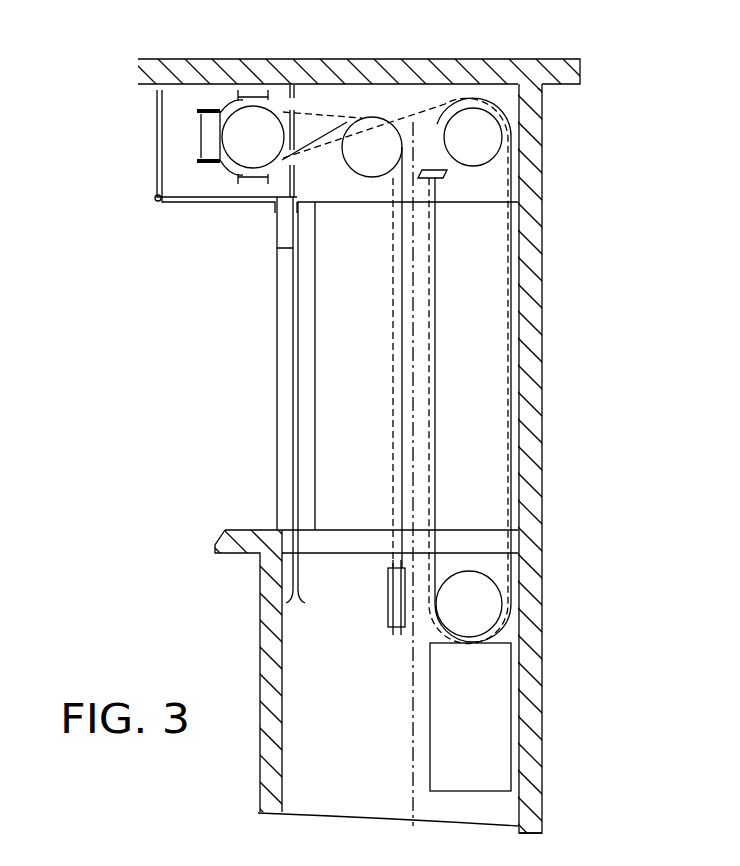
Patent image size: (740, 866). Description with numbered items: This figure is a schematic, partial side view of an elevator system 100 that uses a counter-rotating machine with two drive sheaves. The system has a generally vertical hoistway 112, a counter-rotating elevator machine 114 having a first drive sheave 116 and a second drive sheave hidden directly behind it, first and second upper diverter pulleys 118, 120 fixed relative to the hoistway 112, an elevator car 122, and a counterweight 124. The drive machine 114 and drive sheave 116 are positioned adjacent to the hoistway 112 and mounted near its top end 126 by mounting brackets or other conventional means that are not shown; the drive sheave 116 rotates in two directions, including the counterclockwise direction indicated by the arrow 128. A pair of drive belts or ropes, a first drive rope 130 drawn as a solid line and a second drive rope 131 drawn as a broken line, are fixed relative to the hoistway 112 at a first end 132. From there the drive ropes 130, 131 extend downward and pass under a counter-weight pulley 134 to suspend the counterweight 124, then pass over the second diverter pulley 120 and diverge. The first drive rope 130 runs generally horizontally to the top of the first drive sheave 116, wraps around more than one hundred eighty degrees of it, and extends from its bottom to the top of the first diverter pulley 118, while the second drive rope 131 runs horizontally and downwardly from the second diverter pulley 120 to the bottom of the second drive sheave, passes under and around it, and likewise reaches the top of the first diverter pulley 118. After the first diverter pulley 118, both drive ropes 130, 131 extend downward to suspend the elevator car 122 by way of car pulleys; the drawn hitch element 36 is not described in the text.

The elevator system 100 is at (182, 270).
The hoistway 112 is at (542, 282).
The counter-rotating elevator machine 114 is at (184, 146).
The first drive sheave 116 is at (255, 124).
The first upper diverter pulley 118 is at (363, 142).
The second upper diverter pulley 120 is at (470, 130).
The elevator car 122 is at (293, 334).
The counterweight 124 is at (450, 766).
The top end 126 is at (542, 162).
The arrow 128 is at (127, 108).
The first drive rope 130 is at (391, 112).
The second drive rope 131 is at (318, 148).
The first end 132 is at (437, 178).
The counter-weight pulley 134 is at (468, 592).
The rope hitch 36 is at (395, 590).